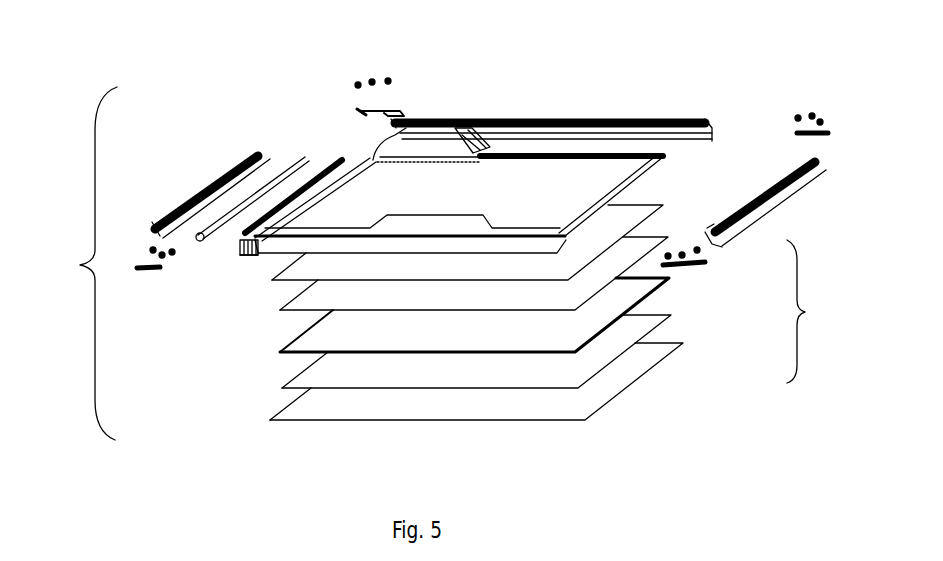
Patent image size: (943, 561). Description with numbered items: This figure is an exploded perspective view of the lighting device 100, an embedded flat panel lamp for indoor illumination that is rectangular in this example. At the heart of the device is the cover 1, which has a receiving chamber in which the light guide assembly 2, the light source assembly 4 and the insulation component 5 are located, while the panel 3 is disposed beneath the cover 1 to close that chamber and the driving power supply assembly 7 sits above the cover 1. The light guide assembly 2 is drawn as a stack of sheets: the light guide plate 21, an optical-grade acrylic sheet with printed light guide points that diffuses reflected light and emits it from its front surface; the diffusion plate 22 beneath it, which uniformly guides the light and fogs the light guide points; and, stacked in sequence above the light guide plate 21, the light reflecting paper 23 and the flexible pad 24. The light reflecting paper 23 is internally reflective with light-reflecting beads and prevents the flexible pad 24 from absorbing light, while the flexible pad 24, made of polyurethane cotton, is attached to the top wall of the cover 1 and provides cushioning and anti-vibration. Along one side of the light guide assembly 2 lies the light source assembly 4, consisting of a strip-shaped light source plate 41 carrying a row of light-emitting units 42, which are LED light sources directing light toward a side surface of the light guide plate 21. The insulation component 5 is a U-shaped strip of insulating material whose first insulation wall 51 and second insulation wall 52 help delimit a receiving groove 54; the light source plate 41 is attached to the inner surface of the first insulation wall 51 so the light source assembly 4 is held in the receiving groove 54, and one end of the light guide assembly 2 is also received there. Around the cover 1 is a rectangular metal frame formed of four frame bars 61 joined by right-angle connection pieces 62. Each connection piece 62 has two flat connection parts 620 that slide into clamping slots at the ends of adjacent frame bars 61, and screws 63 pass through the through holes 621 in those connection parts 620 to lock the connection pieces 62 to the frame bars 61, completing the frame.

The lighting device 100 is at (76, 263).
The cover 1 is at (607, 170).
The light guide assembly 2 is at (807, 311).
The panel 3 is at (590, 395).
The light source assembly 4 is at (232, 240).
The light source plate 41 is at (241, 242).
The light-emitting units 42 is at (257, 245).
The insulation component 5 is at (198, 240).
The first insulation wall 51 is at (185, 252).
The second insulation wall 52 is at (217, 220).
The receiving groove 54 is at (243, 240).
The frame bars 61 is at (183, 210).
The connection pieces 62 is at (387, 108).
The connection parts 620 is at (397, 110).
The through holes 621 is at (360, 112).
The screws 63 is at (390, 80).
The driving power supply assembly 7 is at (452, 152).
The light guide plate 21 is at (617, 298).
The diffusion plate 22 is at (620, 333).
The light reflecting paper 23 is at (612, 262).
The flexible pad 24 is at (610, 228).